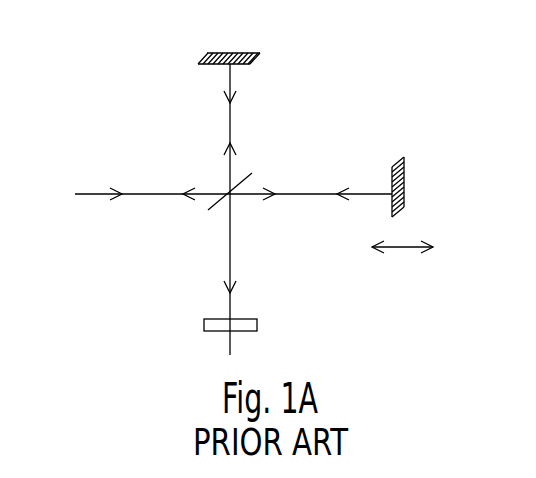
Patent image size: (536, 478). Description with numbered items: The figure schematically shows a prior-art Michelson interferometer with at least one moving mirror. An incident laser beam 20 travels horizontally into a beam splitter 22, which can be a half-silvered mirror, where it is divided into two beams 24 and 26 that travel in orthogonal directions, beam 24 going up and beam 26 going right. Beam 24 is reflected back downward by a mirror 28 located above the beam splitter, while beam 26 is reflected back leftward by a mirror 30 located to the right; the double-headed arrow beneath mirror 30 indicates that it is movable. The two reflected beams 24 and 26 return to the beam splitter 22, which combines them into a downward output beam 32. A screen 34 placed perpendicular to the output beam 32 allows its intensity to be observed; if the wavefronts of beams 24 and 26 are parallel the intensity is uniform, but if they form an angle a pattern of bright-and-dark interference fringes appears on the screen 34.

The incident laser beam 20 is at (97, 193).
The beam splitter 22 is at (215, 212).
The beam 24 is at (232, 126).
The beam 26 is at (320, 193).
The mirror 28 is at (230, 53).
The mirror 30 is at (405, 184).
The output beam 32 is at (232, 268).
The screen 34 is at (200, 339).